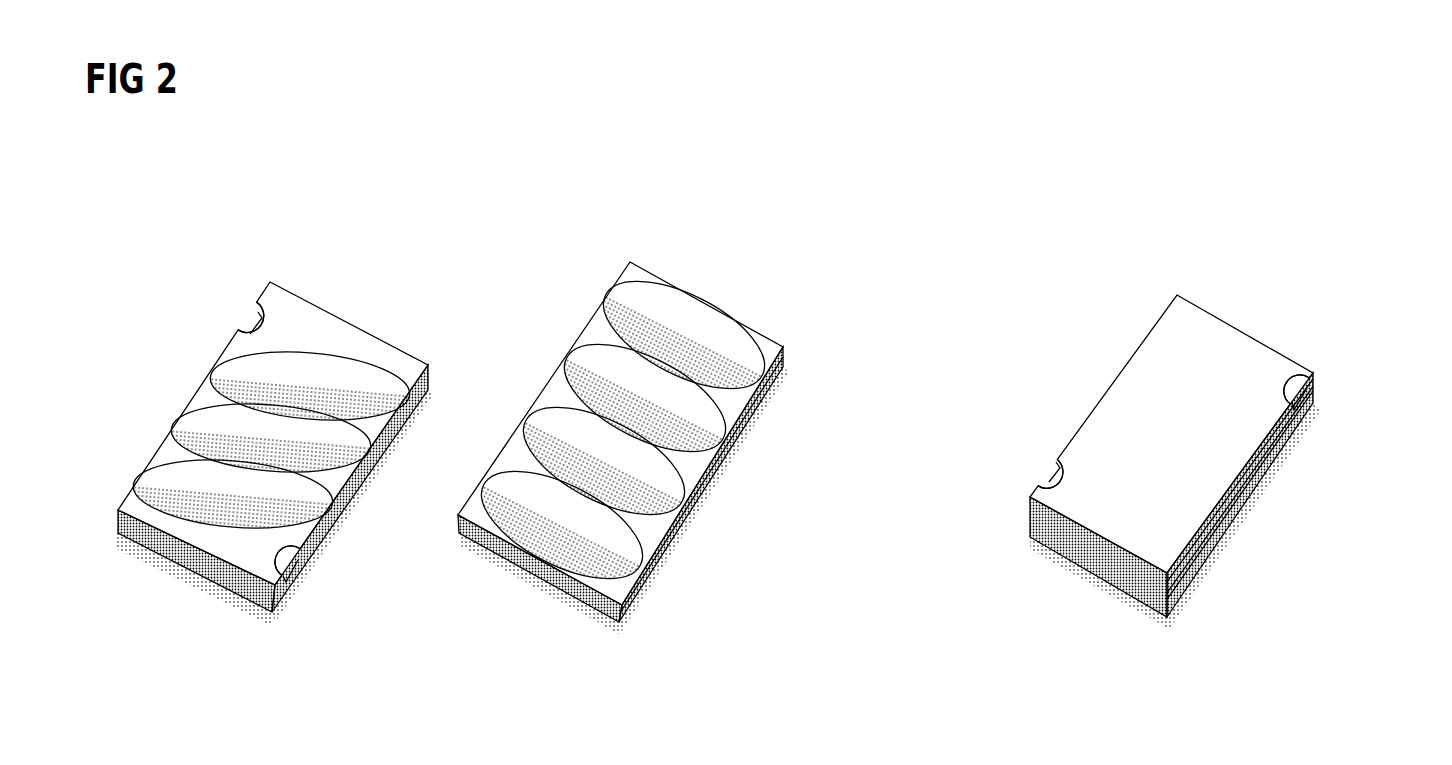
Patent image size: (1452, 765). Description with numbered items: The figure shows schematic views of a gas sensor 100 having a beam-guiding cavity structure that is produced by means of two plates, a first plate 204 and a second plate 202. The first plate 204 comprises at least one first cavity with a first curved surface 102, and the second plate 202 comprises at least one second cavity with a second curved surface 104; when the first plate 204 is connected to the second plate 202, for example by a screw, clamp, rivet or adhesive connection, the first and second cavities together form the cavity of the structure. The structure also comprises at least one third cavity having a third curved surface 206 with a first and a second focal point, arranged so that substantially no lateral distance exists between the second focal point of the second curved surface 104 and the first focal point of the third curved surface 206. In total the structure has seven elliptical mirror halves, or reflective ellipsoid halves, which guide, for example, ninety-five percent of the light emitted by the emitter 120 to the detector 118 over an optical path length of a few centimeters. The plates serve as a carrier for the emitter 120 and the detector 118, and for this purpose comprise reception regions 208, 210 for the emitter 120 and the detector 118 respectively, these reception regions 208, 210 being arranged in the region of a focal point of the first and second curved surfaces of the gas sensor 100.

The gas sensor 100 is at (1183, 414).
The first curved surface 102 is at (620, 428).
The second curved surface 104 is at (228, 384).
The detector 118 is at (1034, 467).
The emitter 120 is at (1319, 432).
The second plate 202 is at (658, 450).
The first plate 204 is at (778, 340).
The third curved surface 206 is at (573, 357).
The reception region 208 is at (291, 572).
The reception region 210 is at (256, 316).